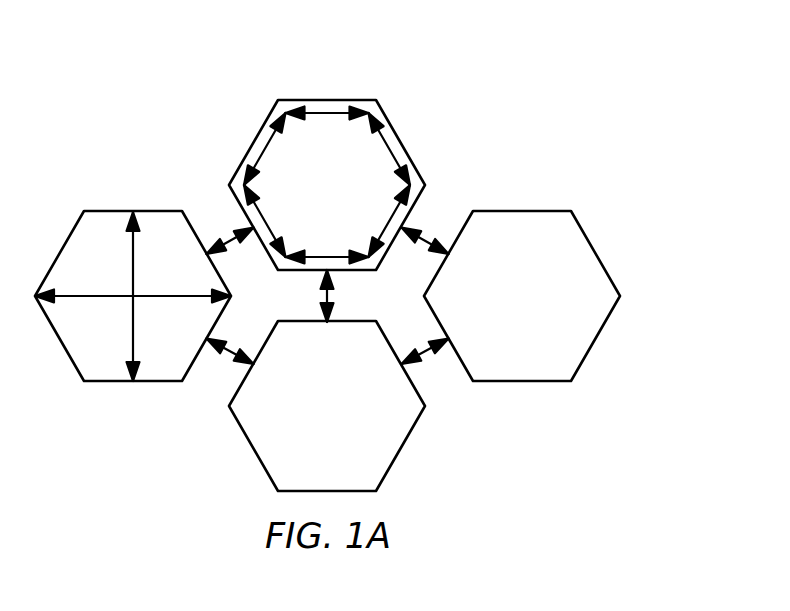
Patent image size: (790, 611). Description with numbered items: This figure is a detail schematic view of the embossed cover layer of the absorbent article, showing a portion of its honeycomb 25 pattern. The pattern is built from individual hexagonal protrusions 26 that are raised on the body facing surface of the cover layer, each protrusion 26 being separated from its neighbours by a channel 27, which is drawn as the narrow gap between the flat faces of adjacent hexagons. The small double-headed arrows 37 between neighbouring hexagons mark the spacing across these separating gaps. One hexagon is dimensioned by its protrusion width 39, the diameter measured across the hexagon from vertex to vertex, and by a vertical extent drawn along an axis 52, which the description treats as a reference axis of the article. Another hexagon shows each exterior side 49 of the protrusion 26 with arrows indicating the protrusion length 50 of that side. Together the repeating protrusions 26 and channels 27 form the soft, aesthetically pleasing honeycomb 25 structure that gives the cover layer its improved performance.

The honeycomb 25 is at (327, 279).
The protrusion 26 is at (508, 312).
The channel 27 is at (329, 295).
The cell wall spacing 37 is at (228, 240).
The protrusion width 39 is at (78, 298).
The side 49 is at (400, 140).
The protrusion length 50 is at (265, 150).
The horizontal axis 52 is at (135, 248).